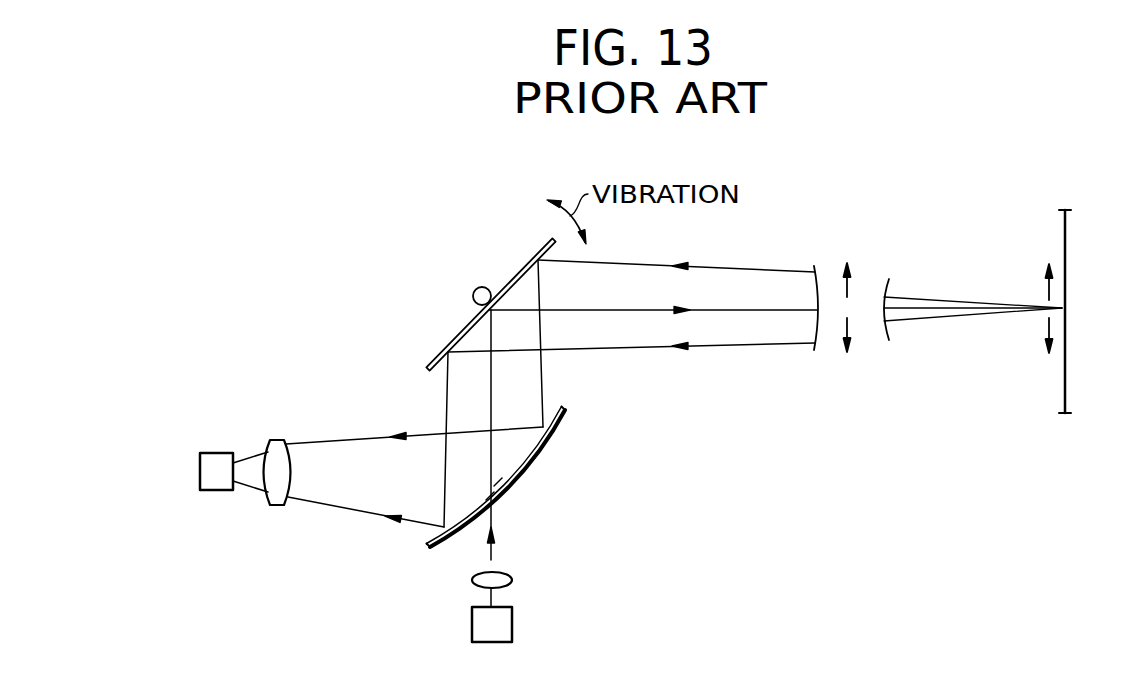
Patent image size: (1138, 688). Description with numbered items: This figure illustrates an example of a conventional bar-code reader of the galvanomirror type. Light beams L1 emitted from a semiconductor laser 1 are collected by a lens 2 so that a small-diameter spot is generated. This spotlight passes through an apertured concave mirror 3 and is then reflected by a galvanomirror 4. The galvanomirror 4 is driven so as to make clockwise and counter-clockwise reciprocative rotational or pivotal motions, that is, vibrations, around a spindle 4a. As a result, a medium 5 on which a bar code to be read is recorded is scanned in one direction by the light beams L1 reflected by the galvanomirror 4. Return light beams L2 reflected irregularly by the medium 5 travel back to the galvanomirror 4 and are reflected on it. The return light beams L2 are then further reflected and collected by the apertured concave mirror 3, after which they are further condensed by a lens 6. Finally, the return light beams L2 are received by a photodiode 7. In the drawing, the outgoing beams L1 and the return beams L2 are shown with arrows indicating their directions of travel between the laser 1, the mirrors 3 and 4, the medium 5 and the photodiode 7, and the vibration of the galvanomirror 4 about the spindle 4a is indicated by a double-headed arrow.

The semiconductor laser 1 is at (513, 621).
The lens 2 is at (513, 580).
The apertured concave mirror 3 is at (551, 433).
The galvanomirror 4 is at (445, 318).
The spindle 4a is at (479, 287).
The medium 5 is at (1066, 241).
The lens 6 is at (277, 506).
The photodiode 7 is at (213, 490).
The light beams L1 is at (617, 310).
The return light beams L2 is at (643, 263).